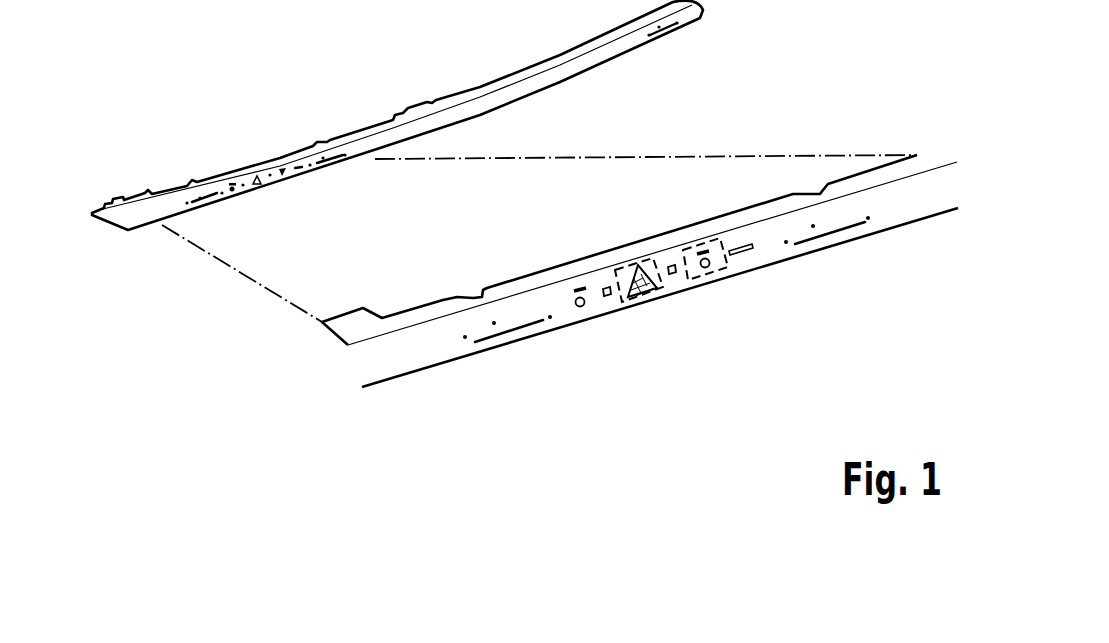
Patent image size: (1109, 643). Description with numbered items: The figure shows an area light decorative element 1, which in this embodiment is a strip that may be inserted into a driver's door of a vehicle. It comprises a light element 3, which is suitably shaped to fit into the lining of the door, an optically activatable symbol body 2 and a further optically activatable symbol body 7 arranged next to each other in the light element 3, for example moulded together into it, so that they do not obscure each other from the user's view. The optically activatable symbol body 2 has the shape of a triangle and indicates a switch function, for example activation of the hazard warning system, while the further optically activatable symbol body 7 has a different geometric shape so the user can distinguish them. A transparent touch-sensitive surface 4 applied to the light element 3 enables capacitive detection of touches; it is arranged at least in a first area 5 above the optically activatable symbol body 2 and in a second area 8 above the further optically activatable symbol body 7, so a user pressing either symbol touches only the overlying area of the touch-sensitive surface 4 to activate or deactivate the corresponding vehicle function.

The area light decorative element 1 is at (217, 125).
The optically activatable symbol body 2 is at (650, 293).
The light element 3 is at (505, 95).
The touch-sensitive surface 4 is at (550, 302).
The first area 5 is at (615, 267).
The further optically activatable symbol body 7 is at (713, 263).
The second area 8 is at (700, 240).